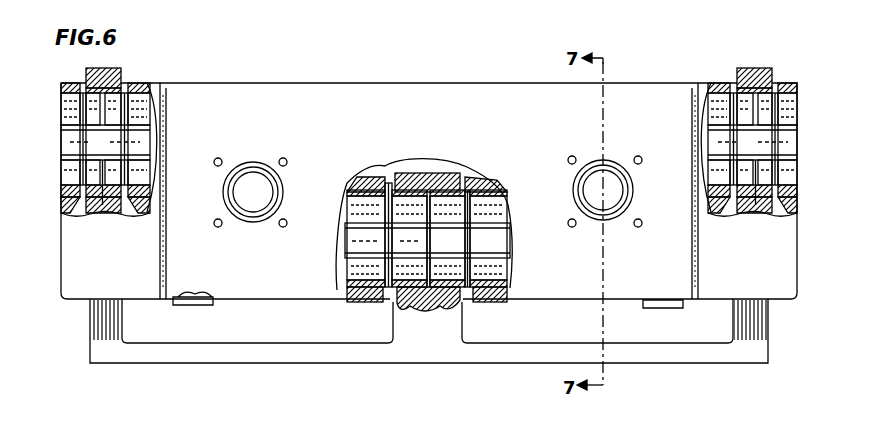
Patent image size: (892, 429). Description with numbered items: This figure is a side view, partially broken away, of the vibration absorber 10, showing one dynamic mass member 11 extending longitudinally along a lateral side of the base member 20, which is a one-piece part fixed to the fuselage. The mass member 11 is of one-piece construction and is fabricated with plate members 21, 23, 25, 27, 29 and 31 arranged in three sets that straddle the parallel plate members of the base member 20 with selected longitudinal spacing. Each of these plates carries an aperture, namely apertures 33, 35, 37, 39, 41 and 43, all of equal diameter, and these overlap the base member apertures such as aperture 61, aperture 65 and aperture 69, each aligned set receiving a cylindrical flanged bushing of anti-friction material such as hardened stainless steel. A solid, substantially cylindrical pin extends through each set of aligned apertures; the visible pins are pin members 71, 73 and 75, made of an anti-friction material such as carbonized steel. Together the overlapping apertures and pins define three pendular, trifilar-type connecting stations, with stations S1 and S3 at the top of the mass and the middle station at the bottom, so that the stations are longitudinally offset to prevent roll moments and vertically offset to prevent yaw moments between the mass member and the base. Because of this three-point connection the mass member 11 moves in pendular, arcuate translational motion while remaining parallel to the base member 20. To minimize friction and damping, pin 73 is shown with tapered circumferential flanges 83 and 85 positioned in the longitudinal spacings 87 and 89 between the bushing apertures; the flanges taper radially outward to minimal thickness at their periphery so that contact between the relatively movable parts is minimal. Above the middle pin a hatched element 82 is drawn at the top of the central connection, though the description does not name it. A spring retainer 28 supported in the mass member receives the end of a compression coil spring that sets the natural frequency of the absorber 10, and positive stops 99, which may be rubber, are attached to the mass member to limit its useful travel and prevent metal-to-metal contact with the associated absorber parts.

The vibration absorber 10 is at (221, 58).
The mass member 11 is at (393, 127).
The base member 20 is at (313, 354).
The plate member 21 is at (63, 200).
The plate member 23 is at (138, 204).
The plate member 25 is at (373, 180).
The plate member 27 is at (490, 183).
The spring retainer 28 is at (226, 194).
The plate member 29 is at (713, 204).
The plate member 31 is at (795, 202).
The aperture 33 is at (60, 106).
The aperture 35 is at (152, 107).
The aperture 37 is at (366, 290).
The aperture 39 is at (493, 277).
The aperture 41 is at (703, 112).
The aperture 43 is at (799, 112).
The aperture 61 is at (113, 198).
The aperture 65 is at (443, 292).
The aperture 69 is at (760, 203).
The pin member 71 is at (137, 137).
The pin member 73 is at (503, 240).
The pin member 75 is at (788, 143).
The clamp block 82 is at (429, 172).
The tapered circumferential flange 83 is at (393, 238).
The tapered circumferential flange 85 is at (464, 238).
The longitudinal spacing 87 is at (388, 185).
The longitudinal spacing 89 is at (470, 187).
The positive stop 99 is at (188, 312).
The pendular connecting station S1 is at (735, 76).
The pendular connecting station S3 is at (118, 72).